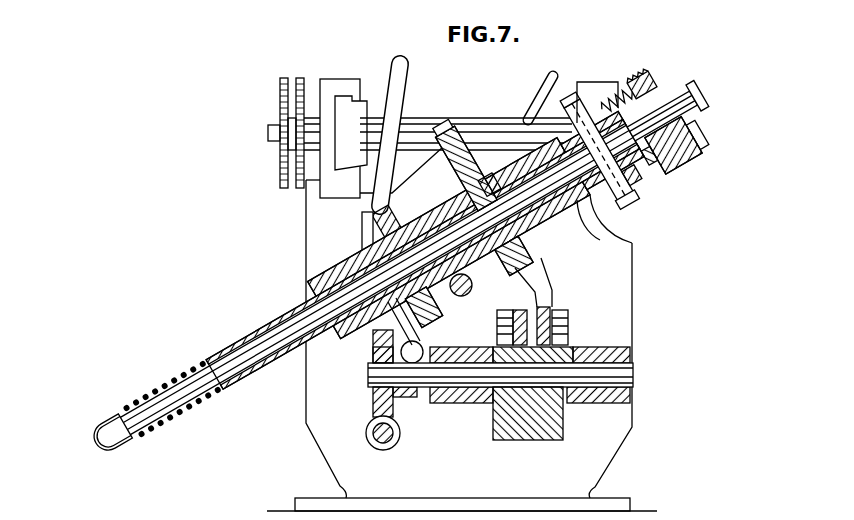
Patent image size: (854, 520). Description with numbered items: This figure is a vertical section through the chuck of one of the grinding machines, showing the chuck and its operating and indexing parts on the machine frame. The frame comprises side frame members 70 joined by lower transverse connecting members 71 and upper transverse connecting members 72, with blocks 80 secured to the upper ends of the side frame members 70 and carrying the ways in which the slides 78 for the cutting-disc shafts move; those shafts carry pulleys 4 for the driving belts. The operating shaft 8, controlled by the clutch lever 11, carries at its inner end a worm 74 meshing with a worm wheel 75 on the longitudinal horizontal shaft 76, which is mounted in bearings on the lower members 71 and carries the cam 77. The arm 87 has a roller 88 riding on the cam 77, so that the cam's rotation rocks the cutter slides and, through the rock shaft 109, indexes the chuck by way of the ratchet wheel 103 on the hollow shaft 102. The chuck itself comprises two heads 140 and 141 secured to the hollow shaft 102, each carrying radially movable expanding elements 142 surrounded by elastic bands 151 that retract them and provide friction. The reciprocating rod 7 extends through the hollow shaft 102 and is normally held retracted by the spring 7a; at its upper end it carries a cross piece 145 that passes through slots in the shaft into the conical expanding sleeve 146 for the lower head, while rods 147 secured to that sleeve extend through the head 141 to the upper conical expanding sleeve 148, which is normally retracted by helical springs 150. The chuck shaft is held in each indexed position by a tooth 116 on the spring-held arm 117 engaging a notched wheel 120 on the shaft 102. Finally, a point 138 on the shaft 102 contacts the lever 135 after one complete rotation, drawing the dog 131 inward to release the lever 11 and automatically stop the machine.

The pulleys 4 is at (280, 158).
The reciprocating rod 7 is at (127, 440).
The spring 7a is at (203, 403).
The operating shaft 8 is at (392, 443).
The clutch operating lever 11 is at (548, 83).
The side frame members 70 is at (305, 232).
The lower transverse connecting members 71 is at (455, 403).
The upper transverse connecting members 72 is at (560, 210).
The worm 74 is at (368, 440).
The worm wheel 75 is at (373, 405).
The longitudinal horizontal shaft 76 is at (483, 378).
The cam 77 is at (528, 435).
The slides 78 is at (352, 112).
The blocks 80 is at (325, 188).
The arm 87 is at (540, 272).
The roller 88 is at (568, 325).
The hollow shaft 102 is at (427, 237).
The ratchet wheel 103 is at (423, 293).
The rock shaft 109 is at (463, 296).
The tooth 116 is at (480, 143).
The arm 117 is at (460, 140).
The notched wheel 120 is at (460, 180).
The dog 131 is at (420, 346).
The lever 135 is at (403, 87).
The point 138 is at (362, 247).
The head 140 is at (633, 243).
The head 141 is at (673, 163).
The expanding elements 142 is at (580, 105).
The cross piece 145 is at (580, 100).
The conical expanding sleeve 146 is at (627, 183).
The rods 147 is at (673, 153).
The upper conical expanding sleeve 148 is at (657, 97).
The helical springs 150 is at (623, 88).
The elastic bands 151 is at (642, 80).